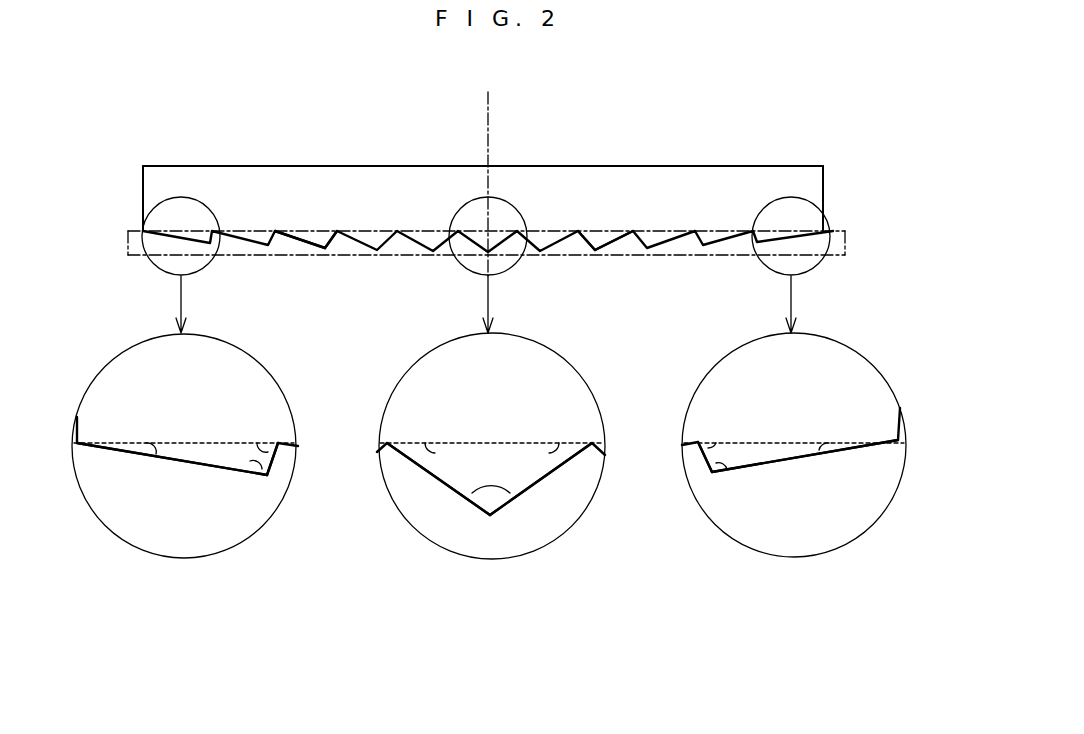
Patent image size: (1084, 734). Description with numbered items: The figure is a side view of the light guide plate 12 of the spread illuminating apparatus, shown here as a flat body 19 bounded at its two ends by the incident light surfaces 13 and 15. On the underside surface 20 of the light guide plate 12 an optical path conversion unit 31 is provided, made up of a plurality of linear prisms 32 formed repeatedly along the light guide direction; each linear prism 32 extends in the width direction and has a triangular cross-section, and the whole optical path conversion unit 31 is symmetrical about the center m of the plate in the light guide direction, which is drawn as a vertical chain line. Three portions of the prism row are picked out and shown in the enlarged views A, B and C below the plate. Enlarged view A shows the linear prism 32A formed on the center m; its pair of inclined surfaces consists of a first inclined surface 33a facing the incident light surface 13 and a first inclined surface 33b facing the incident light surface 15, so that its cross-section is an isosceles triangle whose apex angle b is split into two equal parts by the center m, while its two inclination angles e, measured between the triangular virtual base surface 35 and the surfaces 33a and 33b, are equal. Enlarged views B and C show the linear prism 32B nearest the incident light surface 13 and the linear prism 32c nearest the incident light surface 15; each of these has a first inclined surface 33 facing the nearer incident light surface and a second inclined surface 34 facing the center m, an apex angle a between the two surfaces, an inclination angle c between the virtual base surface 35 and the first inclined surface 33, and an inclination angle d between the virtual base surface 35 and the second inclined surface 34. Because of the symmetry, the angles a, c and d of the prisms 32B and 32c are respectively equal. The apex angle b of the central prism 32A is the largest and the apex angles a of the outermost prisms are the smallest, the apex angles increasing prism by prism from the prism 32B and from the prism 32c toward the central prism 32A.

The light guide plate 12 is at (733, 180).
The incident light surface 13 is at (823, 181).
The incident light surface 15 is at (143, 193).
The cutting tool body 19 is at (488, 341).
The underside surface 20 is at (408, 254).
The optical path conversion unit 31 is at (525, 280).
The linear prism 32 is at (308, 238).
The first inclined surface 33 is at (282, 240).
The second inclined surface 34 is at (333, 238).
The triangular virtual base surface 35 is at (213, 443).
The linear prism 32A is at (533, 483).
The linear prism 32B is at (762, 455).
The linear prism 32c is at (203, 455).
The first inclined surface 33a is at (523, 475).
The first inclined surface 33b is at (438, 482).
The apex angle a is at (253, 467).
The apex angle b is at (491, 479).
The inclination angle c is at (157, 448).
The inclination angle d is at (263, 448).
The inclination angle e is at (437, 448).
The center m is at (488, 112).
The enlarged view A is at (493, 560).
The enlarged view B is at (797, 558).
The enlarged view C is at (190, 560).